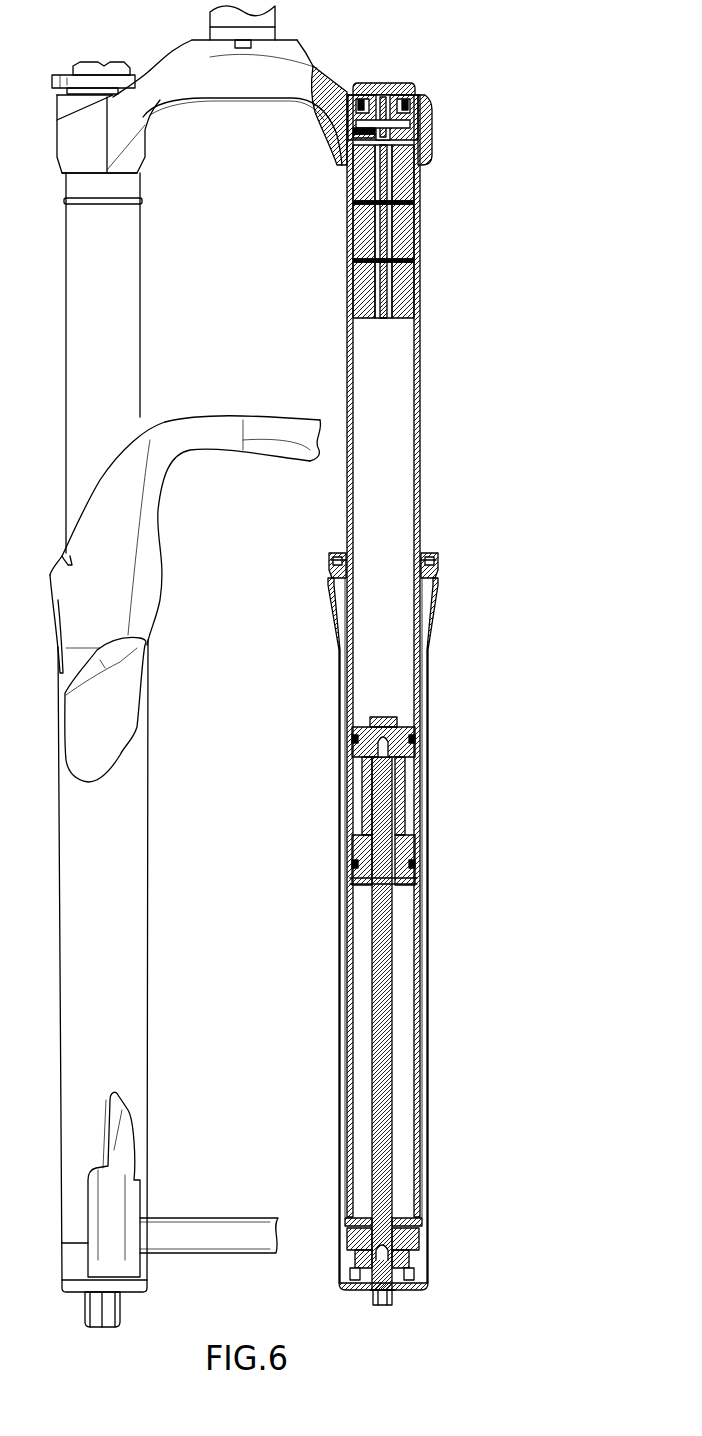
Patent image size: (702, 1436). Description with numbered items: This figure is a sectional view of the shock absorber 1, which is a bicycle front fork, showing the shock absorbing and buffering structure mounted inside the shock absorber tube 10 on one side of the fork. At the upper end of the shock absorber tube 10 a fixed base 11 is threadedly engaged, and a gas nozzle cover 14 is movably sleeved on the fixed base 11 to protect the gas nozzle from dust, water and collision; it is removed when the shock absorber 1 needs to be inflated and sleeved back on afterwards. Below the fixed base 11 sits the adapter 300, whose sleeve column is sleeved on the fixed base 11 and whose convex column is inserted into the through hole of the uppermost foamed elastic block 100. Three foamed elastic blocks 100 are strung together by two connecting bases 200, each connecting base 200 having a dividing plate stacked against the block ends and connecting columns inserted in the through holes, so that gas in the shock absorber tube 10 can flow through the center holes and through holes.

The shock absorber 1 is at (311, 666).
The shock absorber tube 10 is at (420, 442).
The fixed base 11 is at (417, 125).
The gas nozzle cover 14 is at (400, 82).
The foamed elastic block 100 is at (408, 175).
The connecting base 200 is at (416, 203).
The adapter 300 is at (343, 128).